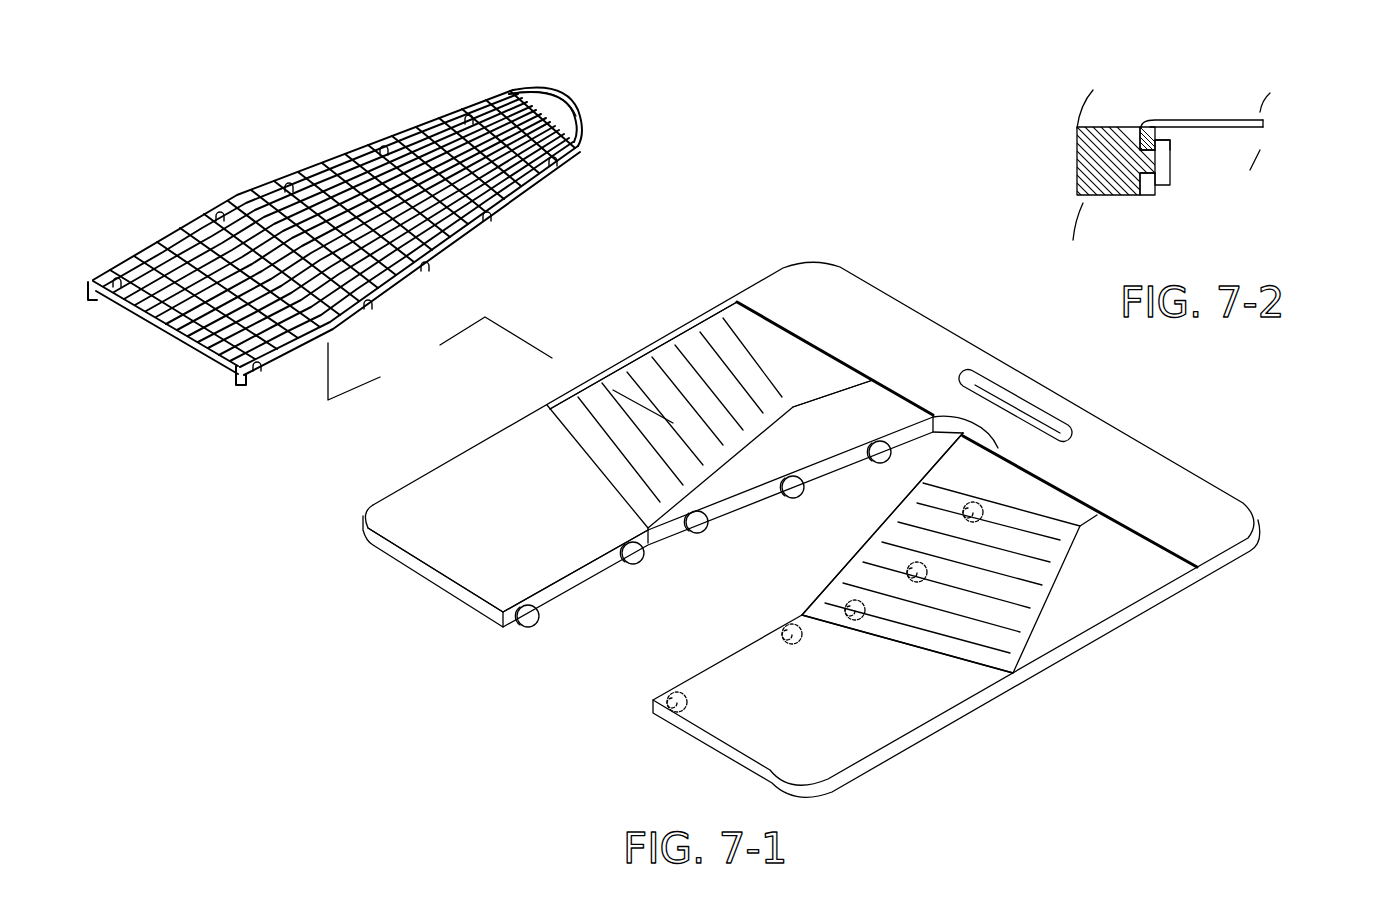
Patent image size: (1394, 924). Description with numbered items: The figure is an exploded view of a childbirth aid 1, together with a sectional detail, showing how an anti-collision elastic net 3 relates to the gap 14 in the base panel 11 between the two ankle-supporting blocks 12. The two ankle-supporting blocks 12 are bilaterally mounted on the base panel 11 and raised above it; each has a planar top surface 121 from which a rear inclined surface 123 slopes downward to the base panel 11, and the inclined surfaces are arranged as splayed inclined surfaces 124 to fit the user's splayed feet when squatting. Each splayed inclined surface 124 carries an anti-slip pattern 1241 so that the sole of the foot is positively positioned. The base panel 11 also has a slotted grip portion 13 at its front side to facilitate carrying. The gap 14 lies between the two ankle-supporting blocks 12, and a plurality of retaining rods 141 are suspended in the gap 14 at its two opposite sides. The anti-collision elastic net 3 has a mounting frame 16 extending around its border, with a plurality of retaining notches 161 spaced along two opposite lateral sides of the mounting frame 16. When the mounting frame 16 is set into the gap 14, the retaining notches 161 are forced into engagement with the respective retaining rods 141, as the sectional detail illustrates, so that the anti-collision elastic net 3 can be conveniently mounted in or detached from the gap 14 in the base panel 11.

In FIG. 7-1, the childbirth aid 1 is at (1252, 474).
In FIG. 7-1, the anti-collision elastic net 3 is at (550, 92).
In FIG. 7-2, the anti-collision elastic net 3 is at (1195, 120).
In FIG. 7-1, the base panel 11 is at (880, 320).
In FIG. 7-2, the base panel 11 is at (1103, 125).
In FIG. 7-1, the ankle-supporting block 12 is at (665, 351).
In FIG. 7-1, the slotted grip portion 13 is at (1037, 410).
In FIG. 7-1, the gap 14 is at (655, 623).
In FIG. 7-2, the gap 14 is at (1208, 168).
In FIG. 7-1, the mounting frame 16 is at (572, 142).
In FIG. 7-2, the mounting frame 16 is at (1160, 120).
In FIG. 7-1, the planar top surface 121 is at (775, 352).
In FIG. 7-1, the rear inclined surface 123 is at (820, 345).
In FIG. 7-1, the splayed inclined surface 124 is at (670, 363).
In FIG. 7-1, the retaining rod 141 is at (800, 497).
In FIG. 7-2, the retaining rod 141 is at (1170, 147).
In FIG. 7-1, the retaining notch 161 is at (547, 163).
In FIG. 7-2, the retaining notch 161 is at (1148, 192).
In FIG. 7-1, the anti-slip pattern 1241 is at (592, 418).